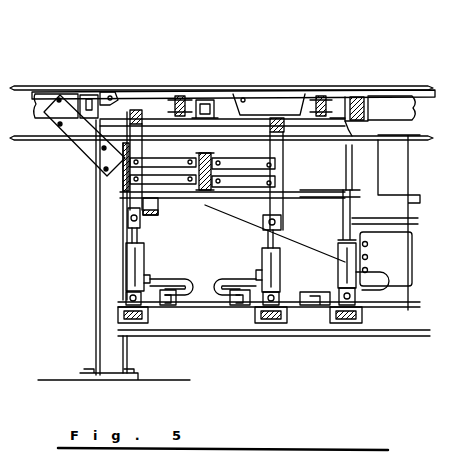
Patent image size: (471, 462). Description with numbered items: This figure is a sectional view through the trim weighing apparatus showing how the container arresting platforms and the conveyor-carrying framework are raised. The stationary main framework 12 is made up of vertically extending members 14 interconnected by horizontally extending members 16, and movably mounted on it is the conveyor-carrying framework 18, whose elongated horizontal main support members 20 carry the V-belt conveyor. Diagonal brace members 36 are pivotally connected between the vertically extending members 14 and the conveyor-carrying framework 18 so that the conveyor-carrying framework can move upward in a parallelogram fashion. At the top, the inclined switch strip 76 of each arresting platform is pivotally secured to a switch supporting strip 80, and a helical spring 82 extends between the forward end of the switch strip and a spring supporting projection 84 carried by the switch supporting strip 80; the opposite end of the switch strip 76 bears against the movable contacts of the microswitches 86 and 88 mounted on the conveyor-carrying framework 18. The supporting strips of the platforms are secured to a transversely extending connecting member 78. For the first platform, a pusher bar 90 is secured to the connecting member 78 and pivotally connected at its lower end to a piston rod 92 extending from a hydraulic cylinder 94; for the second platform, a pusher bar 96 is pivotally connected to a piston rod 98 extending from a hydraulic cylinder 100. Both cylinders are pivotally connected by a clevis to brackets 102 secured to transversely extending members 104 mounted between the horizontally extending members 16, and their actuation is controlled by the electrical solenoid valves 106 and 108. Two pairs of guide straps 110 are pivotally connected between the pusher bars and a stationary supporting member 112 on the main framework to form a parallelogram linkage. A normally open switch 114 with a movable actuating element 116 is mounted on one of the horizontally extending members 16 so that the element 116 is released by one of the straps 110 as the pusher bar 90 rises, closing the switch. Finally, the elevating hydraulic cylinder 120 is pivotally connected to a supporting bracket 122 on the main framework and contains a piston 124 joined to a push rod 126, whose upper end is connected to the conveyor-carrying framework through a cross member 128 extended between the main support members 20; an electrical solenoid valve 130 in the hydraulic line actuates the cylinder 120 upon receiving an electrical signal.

The stationary main framework 12 is at (90, 330).
The vertically extending members 14 is at (108, 240).
The horizontally extending members 16 is at (353, 202).
The conveyor-carrying framework 18 is at (414, 110).
The main support members 20 is at (400, 115).
The diagonal brace members 36 is at (85, 148).
The switch strip 76 is at (165, 86).
The transversely extending connecting member 78 is at (135, 110).
The switch supporting strip 80 is at (280, 113).
The helical spring 82 is at (182, 95).
The spring supporting projection 84 is at (312, 118).
The microswitch 86 is at (84, 94).
The microswitch 88 is at (207, 99).
The pusher bar 90 is at (142, 152).
The piston rod 92 is at (138, 238).
The hydraulic cylinder 94 is at (138, 264).
The pusher bar 96 is at (284, 156).
The piston rod 98 is at (266, 241).
The hydraulic cylinder 100 is at (262, 262).
The brackets 102 is at (126, 296).
The transversely extending members 104 is at (128, 330).
The electrical solenoid valve 106 is at (188, 300).
The electrical solenoid valve 108 is at (222, 302).
The guide straps 110 is at (170, 160).
The stationary supporting member 112 is at (205, 207).
The normally open switch 114 is at (128, 206).
The movable actuating element 116 is at (143, 194).
The hydraulic cylinder 120 is at (370, 263).
The supporting bracket 122 is at (372, 326).
The piston 124 is at (344, 238).
The push rod 126 is at (346, 170).
The cross member 128 is at (365, 104).
The electrical solenoid valve 130 is at (314, 326).